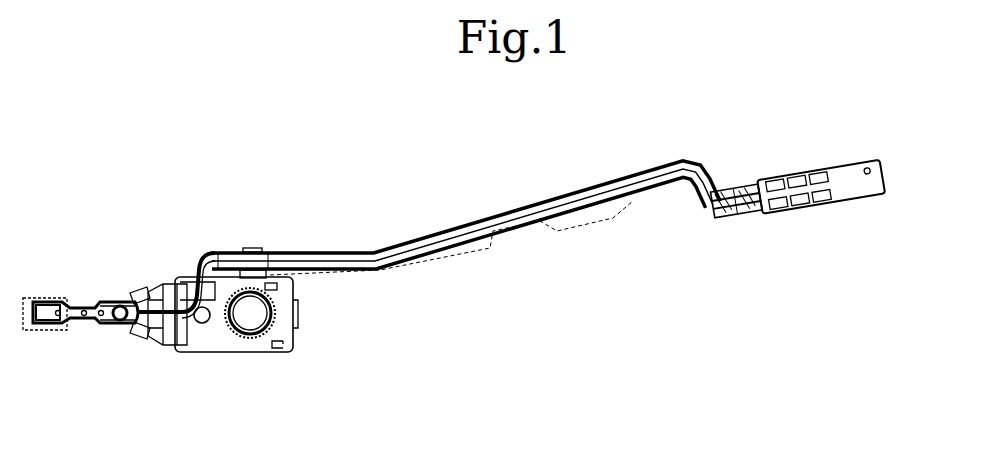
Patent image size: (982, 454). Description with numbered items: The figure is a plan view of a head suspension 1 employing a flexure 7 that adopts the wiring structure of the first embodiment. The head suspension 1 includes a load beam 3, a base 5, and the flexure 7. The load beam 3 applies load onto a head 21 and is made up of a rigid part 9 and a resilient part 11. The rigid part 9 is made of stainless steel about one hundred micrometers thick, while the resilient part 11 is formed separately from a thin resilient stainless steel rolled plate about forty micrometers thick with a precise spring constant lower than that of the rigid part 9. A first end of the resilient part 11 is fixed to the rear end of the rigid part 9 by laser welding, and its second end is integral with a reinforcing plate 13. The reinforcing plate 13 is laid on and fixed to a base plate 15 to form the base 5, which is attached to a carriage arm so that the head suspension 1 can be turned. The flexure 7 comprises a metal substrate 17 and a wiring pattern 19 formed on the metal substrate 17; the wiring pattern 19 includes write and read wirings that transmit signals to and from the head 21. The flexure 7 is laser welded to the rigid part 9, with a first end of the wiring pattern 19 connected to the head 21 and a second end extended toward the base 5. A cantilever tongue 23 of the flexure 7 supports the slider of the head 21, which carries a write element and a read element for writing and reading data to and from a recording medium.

The head suspension 1 is at (376, 184).
The load beam 3 is at (108, 293).
The base 5 is at (216, 357).
The flexure 7 is at (237, 246).
The rigid part 9 is at (139, 292).
The resilient part 11 is at (167, 288).
The reinforcing plate 13 is at (202, 335).
The base plate 15 is at (259, 355).
The metal substrate 17 is at (415, 266).
The wiring pattern 19 is at (333, 247).
The head 21 is at (52, 293).
The tongue 23 is at (50, 328).